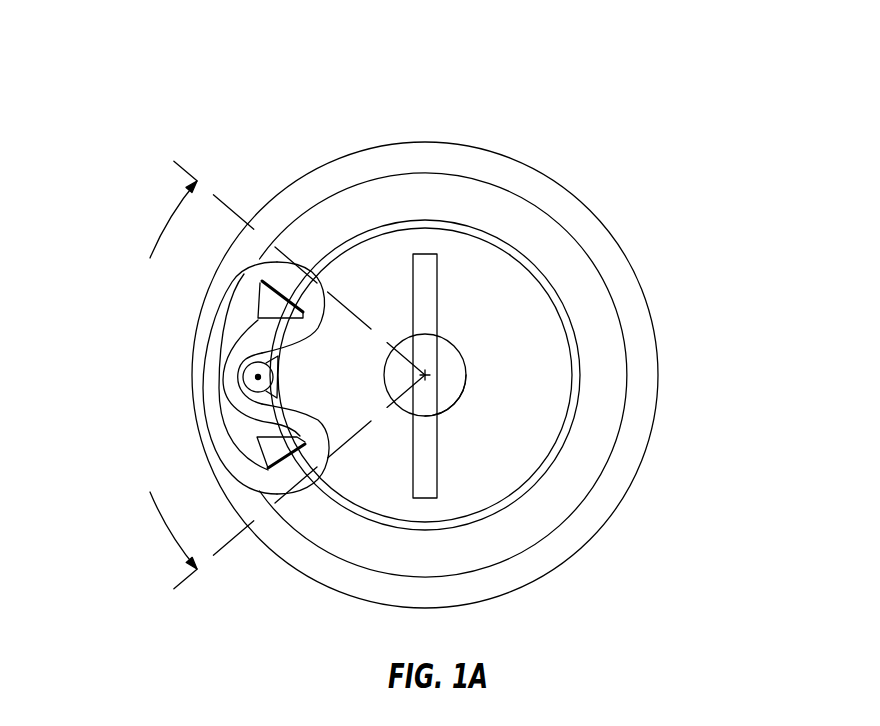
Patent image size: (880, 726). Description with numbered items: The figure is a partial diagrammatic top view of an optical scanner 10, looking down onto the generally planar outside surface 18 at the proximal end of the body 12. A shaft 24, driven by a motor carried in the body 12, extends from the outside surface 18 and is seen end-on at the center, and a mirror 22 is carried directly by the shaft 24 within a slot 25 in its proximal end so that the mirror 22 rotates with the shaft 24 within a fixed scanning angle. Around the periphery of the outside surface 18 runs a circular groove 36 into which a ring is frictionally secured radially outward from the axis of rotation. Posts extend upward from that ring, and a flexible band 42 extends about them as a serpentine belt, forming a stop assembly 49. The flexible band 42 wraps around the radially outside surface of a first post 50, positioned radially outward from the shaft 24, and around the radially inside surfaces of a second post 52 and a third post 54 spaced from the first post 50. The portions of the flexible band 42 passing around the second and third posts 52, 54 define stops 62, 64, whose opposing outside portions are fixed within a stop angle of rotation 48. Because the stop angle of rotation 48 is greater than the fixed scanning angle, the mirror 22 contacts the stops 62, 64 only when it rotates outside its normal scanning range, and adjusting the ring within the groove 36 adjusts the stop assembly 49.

The optical scanner 10 is at (652, 162).
The body 12 is at (648, 452).
The outside surface 18 is at (490, 471).
The mirror 22 is at (427, 312).
The shaft 24 is at (465, 360).
The slot 25 is at (438, 414).
The groove 36 is at (577, 350).
The flexible band 42 is at (243, 355).
The stop angle of rotation 48 is at (165, 222).
The stop assembly 49 is at (145, 423).
The first post 50 is at (273, 377).
The second post 52 is at (281, 303).
The third post 54 is at (277, 447).
The stop 62 is at (327, 305).
The stop 64 is at (327, 456).